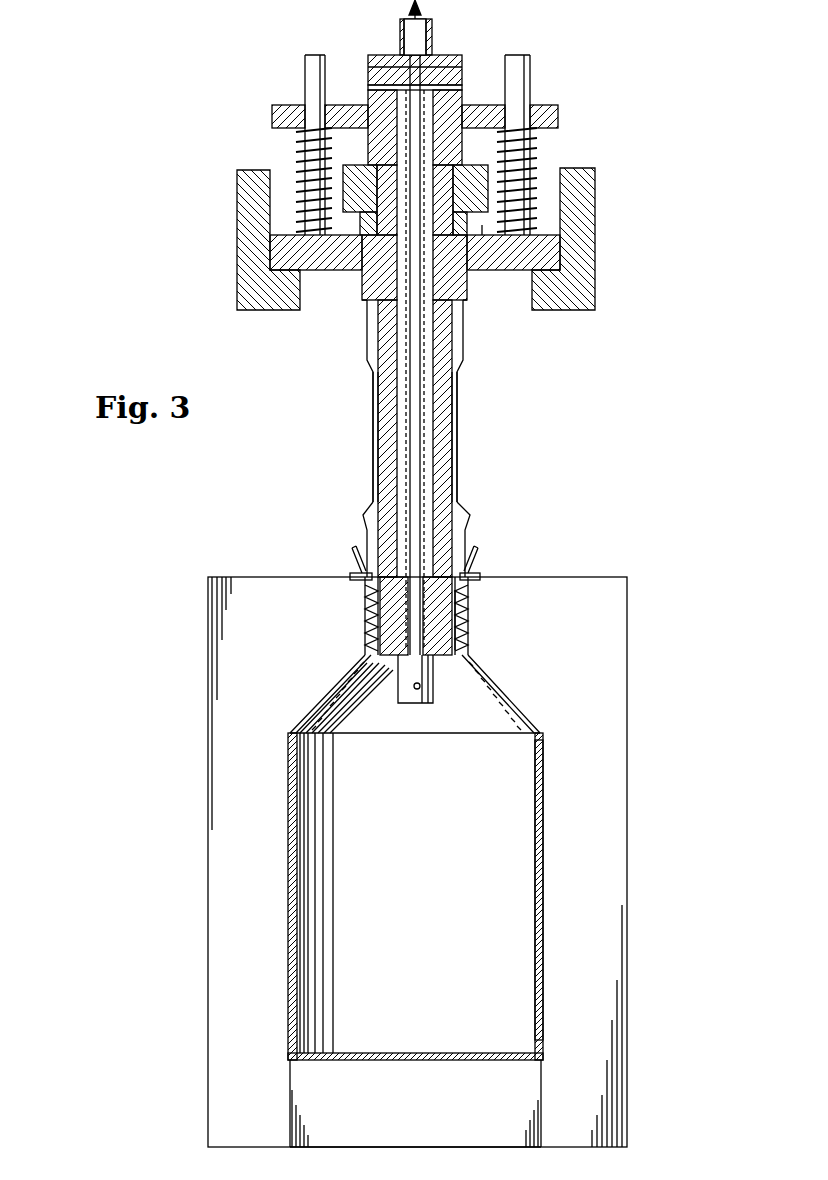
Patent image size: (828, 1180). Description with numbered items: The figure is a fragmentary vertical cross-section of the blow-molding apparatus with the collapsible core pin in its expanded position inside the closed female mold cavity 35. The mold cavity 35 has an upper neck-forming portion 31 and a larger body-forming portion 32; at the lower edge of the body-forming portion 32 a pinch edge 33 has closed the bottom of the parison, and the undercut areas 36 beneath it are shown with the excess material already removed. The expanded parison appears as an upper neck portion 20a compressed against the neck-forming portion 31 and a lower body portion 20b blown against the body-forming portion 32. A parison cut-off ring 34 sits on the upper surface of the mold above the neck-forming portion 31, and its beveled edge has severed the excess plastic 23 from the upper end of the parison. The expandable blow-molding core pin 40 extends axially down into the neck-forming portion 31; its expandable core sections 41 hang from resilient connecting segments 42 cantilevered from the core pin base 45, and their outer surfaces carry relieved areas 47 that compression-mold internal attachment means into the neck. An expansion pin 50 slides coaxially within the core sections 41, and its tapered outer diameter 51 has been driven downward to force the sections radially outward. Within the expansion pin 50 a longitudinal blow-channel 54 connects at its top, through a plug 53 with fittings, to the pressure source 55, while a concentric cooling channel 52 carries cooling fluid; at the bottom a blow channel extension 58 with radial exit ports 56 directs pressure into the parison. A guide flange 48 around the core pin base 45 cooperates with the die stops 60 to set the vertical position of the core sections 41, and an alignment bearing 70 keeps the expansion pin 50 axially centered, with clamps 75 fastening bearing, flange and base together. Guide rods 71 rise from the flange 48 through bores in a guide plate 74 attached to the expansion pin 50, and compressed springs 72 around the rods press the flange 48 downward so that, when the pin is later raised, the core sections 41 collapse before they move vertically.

The expanded parison 20a is at (365, 610).
The expanded parison 20b is at (288, 876).
The excess plastic 23 is at (476, 548).
The neck-forming portion 31 is at (385, 592).
The body-forming portion 32 is at (540, 874).
The pinch edge 33 is at (375, 1058).
The parison cut-off ring 34 is at (356, 576).
The female mold cavity 35 is at (633, 656).
The undercut areas 36 is at (462, 1115).
The expandable blow-molding core pin 40 is at (465, 405).
The expandable core sections 41 is at (478, 578).
The resilient connecting segments 42 is at (375, 418).
The core pin base 45 is at (370, 332).
The relieved areas 47 is at (462, 612).
The guide flange 48 is at (545, 250).
The expansion pin 50 is at (385, 375).
The tapered outer diameter 51 is at (458, 472).
The cooling channel 52 is at (462, 88).
The plug 53 is at (433, 42).
The blow-channel 54 is at (405, 140).
The pressure source 55 is at (422, 9).
The exit ports 56 is at (419, 689).
The blow channel extension 58 is at (407, 676).
The die stops 60 is at (597, 255).
The alignment bearing 70 is at (470, 162).
The guide rods 71 is at (310, 152).
The springs 72 is at (537, 148).
The guide plate 74 is at (558, 116).
The clamps 75 is at (483, 226).